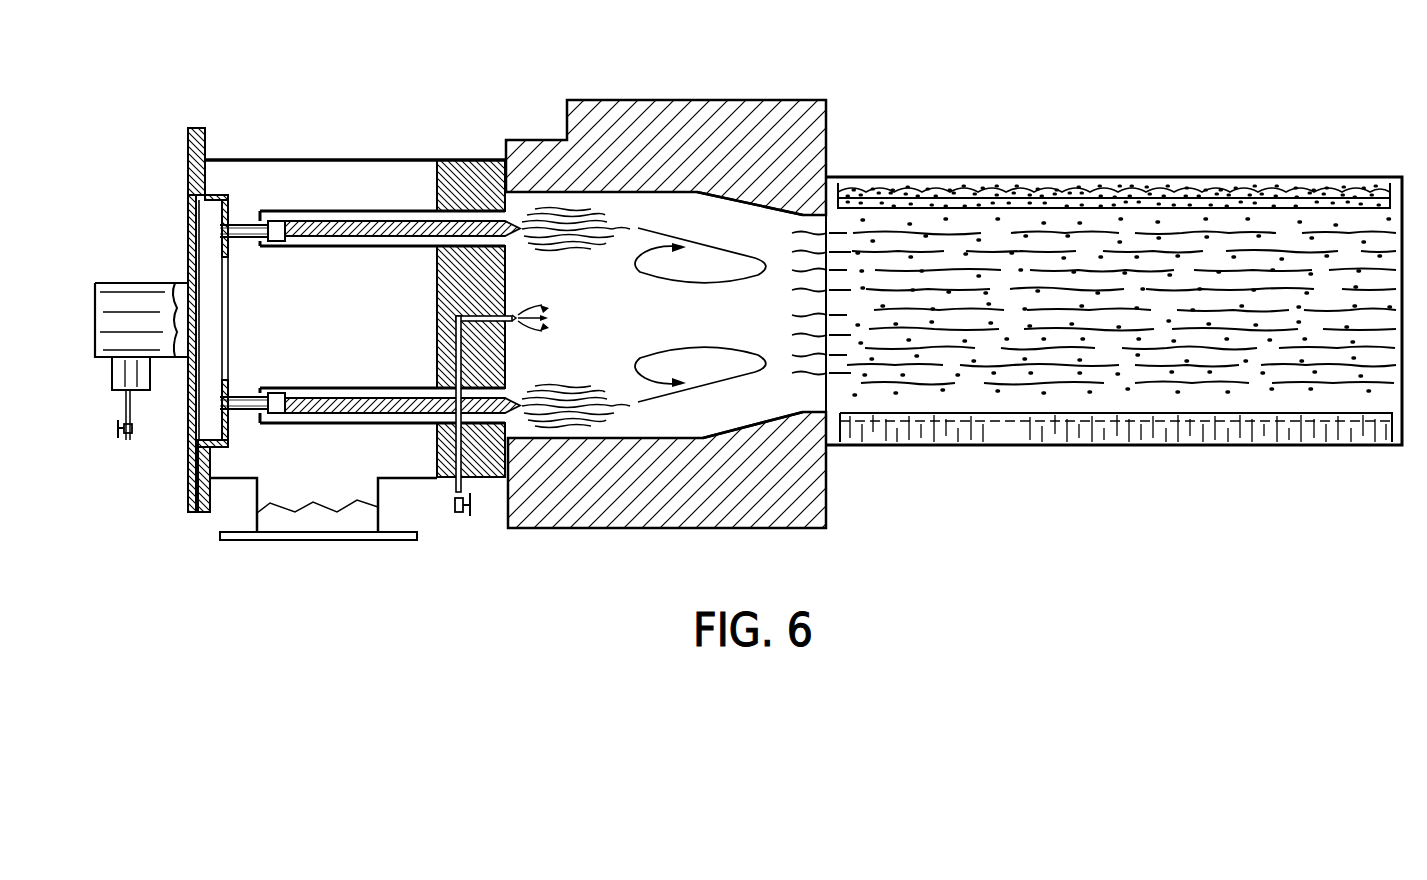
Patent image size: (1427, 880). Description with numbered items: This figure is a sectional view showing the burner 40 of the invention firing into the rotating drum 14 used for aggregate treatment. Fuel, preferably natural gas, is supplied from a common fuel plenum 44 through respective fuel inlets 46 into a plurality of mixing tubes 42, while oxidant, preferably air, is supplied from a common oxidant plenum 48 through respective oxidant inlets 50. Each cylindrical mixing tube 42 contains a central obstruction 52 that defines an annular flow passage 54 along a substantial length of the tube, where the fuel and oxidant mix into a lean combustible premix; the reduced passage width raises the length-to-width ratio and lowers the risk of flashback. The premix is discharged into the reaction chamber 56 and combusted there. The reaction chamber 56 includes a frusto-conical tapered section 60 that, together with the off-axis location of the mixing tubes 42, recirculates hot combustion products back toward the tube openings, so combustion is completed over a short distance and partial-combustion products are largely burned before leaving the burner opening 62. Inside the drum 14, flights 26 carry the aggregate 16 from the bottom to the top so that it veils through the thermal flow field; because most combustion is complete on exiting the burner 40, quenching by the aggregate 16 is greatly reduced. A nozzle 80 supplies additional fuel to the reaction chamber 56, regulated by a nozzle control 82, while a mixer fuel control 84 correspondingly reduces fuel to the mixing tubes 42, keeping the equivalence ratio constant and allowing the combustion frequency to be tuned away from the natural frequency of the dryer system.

The rotating drum 14 is at (1120, 177).
The aggregate 16 is at (1250, 190).
The flights 26 is at (900, 185).
The burner 40 is at (543, 80).
The mixing tubes 42 is at (360, 249).
The fuel plenum 44 is at (145, 283).
The fuel inlets 46 is at (243, 223).
The oxidant plenum 48 is at (360, 158).
The oxidant inlets 50 is at (262, 247).
The central obstruction 52 is at (322, 225).
The annular flow passage 54 is at (378, 211).
The reaction chamber 56 is at (610, 324).
The tapered section 60 is at (744, 204).
The burner opening 62 is at (830, 303).
The nozzle 80 is at (518, 310).
The nozzle control 82 is at (455, 504).
The mixer fuel control 84 is at (132, 433).